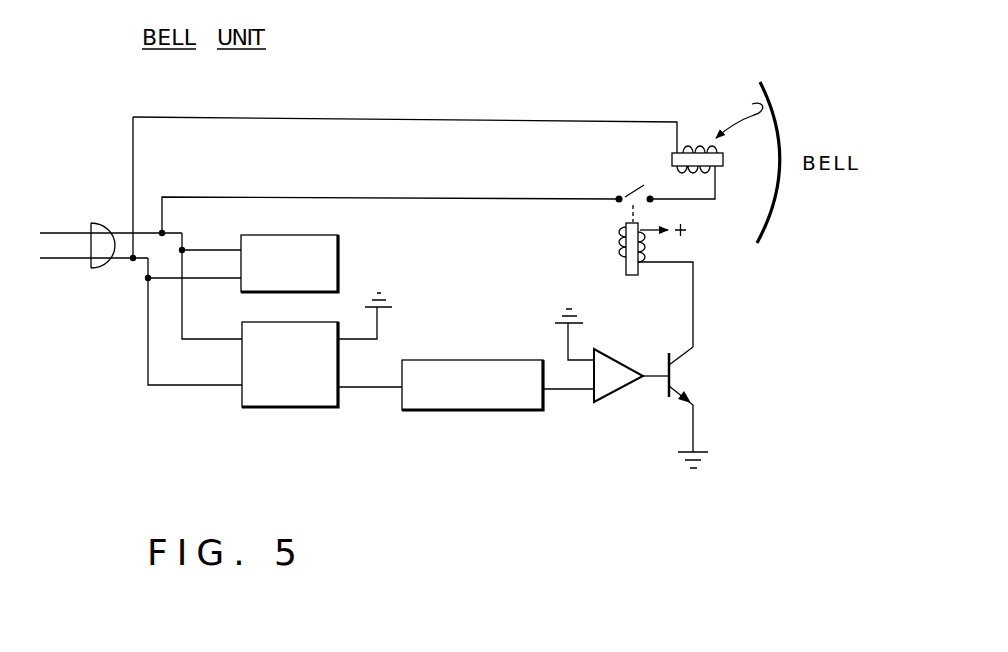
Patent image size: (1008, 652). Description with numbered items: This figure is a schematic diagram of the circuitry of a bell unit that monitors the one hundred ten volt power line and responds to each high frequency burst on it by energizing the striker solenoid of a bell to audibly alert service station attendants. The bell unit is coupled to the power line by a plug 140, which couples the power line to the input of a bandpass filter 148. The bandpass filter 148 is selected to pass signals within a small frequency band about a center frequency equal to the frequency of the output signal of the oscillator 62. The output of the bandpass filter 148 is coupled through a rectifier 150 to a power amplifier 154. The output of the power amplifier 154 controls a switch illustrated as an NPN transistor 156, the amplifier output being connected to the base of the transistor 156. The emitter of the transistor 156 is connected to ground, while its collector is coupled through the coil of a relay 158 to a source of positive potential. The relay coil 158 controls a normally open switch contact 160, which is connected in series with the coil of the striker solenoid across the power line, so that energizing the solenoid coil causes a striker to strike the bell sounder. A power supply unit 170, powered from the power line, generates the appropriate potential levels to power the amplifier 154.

The plug 140 is at (84, 265).
The power supply unit 170 is at (338, 268).
The bandpass filter 148 is at (298, 408).
The rectifier 150 is at (503, 411).
The power amplifier 154 is at (606, 401).
The transistor 156 is at (678, 379).
The relay coil 158 is at (616, 259).
The normally open switch contact 160 is at (626, 193).
The oscillator 62 is at (722, 148).